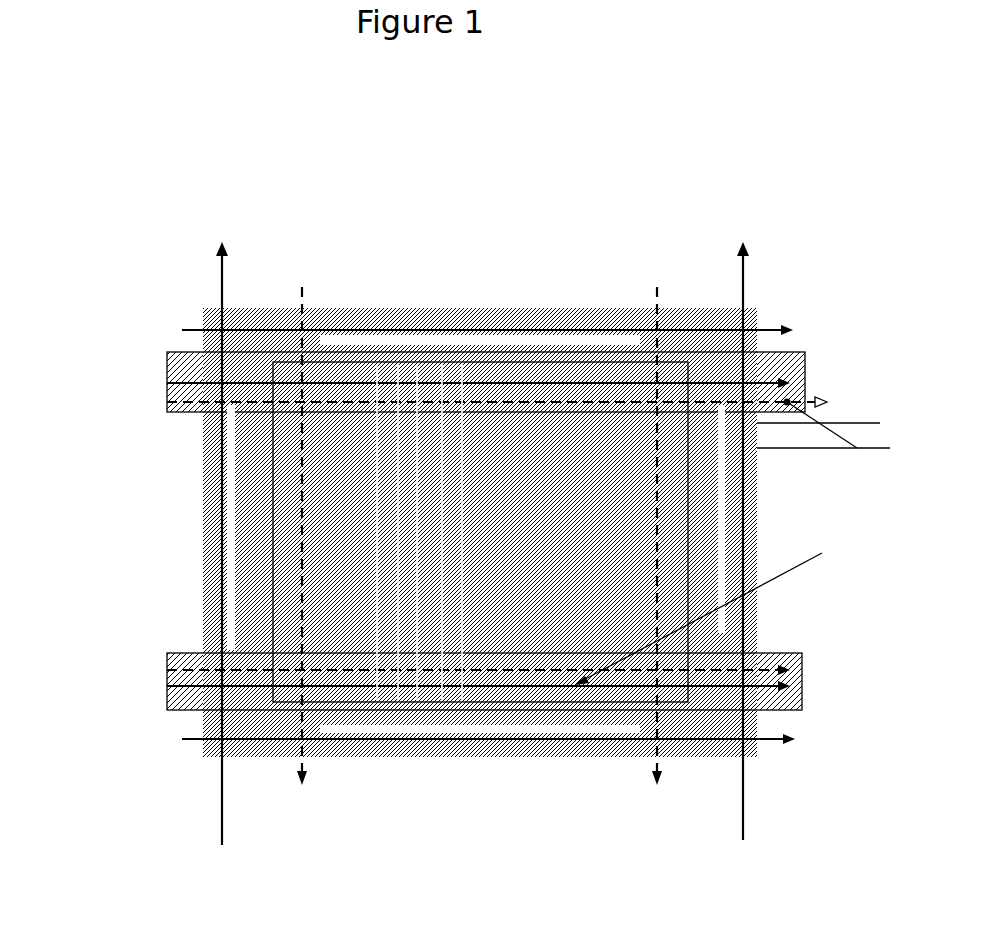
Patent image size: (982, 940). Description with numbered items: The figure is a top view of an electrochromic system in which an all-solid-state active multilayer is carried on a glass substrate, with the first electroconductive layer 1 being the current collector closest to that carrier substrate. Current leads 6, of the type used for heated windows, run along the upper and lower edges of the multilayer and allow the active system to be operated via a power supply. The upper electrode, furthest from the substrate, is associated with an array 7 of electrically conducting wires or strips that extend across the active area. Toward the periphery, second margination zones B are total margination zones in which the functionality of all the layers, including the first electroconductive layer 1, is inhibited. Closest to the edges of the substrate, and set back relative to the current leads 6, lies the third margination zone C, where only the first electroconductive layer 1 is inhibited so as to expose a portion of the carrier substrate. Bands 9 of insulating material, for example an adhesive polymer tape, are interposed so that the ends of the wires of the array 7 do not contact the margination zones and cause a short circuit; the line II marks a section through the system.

The first electroconductive layer 1 is at (392, 308).
The current leads 6 is at (475, 343).
The array of electrically conducting wires or strips 7 is at (469, 455).
The bands of insulating material 9 is at (167, 385).
The third margination zone C is at (267, 325).
The second margination zone B is at (723, 611).
The section II is at (712, 422).